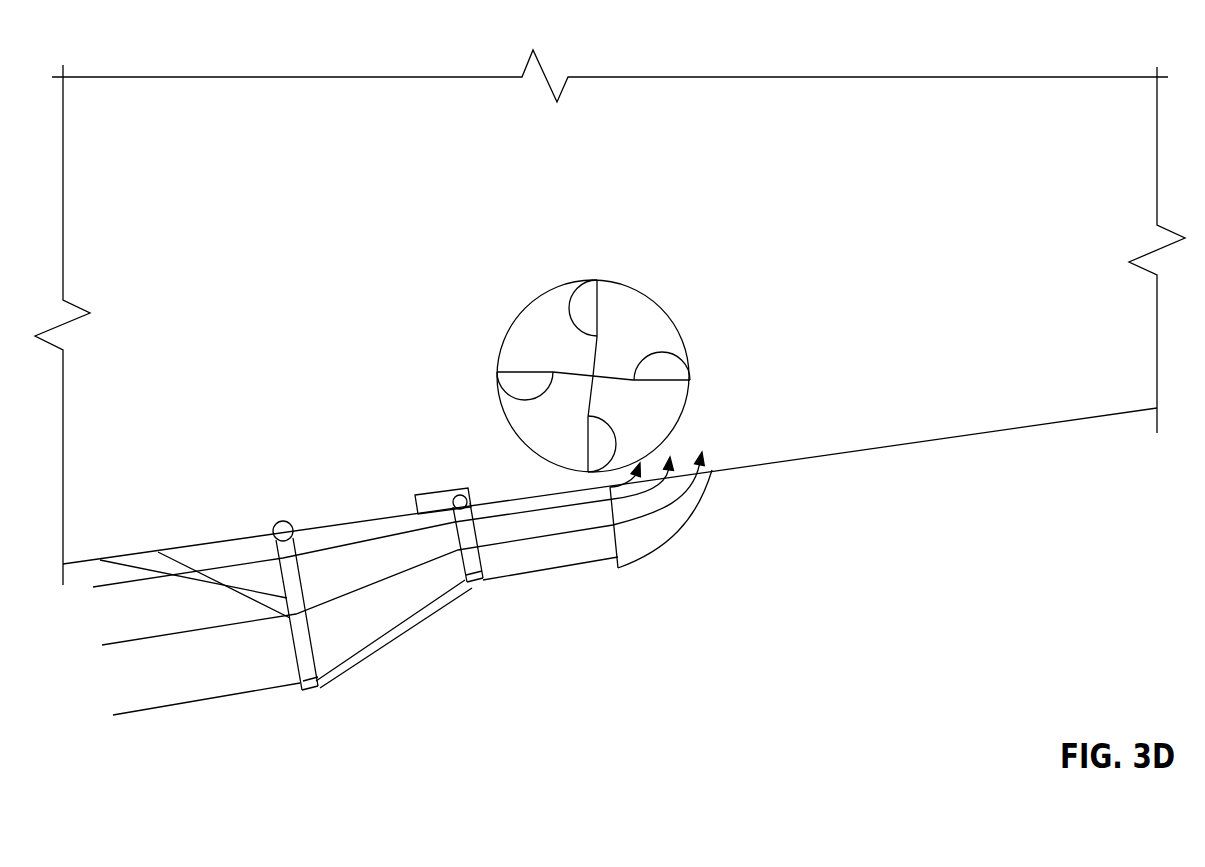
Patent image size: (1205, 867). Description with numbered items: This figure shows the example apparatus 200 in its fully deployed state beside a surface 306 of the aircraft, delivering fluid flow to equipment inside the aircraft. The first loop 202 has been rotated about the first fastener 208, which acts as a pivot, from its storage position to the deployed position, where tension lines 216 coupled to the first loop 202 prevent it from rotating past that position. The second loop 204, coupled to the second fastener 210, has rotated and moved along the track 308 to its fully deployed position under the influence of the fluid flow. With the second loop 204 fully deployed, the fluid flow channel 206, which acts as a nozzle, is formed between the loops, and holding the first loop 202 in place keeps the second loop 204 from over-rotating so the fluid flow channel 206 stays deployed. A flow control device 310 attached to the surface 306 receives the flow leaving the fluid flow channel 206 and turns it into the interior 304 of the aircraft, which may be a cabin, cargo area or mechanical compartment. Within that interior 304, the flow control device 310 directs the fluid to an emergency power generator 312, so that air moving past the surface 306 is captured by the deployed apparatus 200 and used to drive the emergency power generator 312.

The apparatus 200 is at (355, 595).
The first loop 202 is at (312, 682).
The second loop 204 is at (475, 585).
The fluid flow channel 206 is at (362, 655).
The first fastener 208 is at (287, 522).
The second fastener 210 is at (460, 497).
The tension lines 216 is at (142, 570).
The interior 304 is at (605, 376).
The surface 306 is at (775, 463).
The track 308 is at (440, 503).
The flow control device 310 is at (680, 528).
The emergency power generator 312 is at (675, 373).